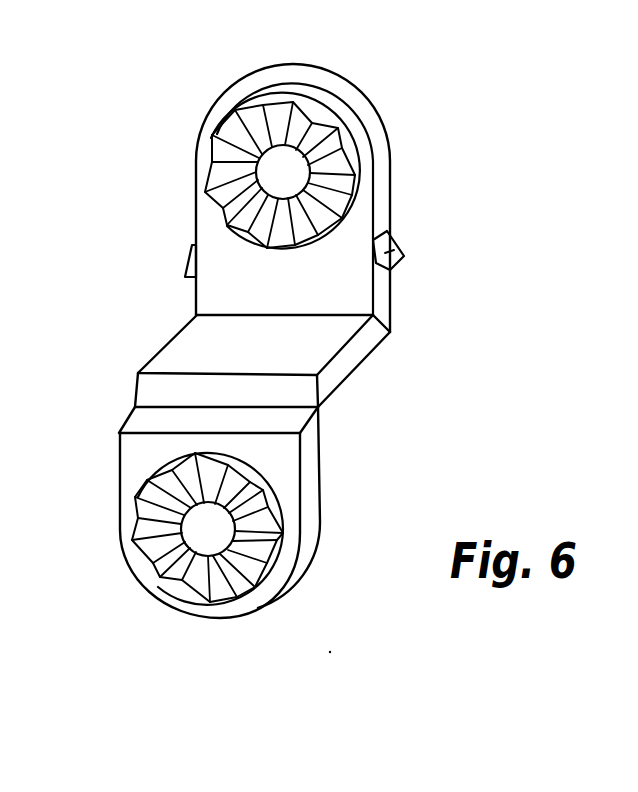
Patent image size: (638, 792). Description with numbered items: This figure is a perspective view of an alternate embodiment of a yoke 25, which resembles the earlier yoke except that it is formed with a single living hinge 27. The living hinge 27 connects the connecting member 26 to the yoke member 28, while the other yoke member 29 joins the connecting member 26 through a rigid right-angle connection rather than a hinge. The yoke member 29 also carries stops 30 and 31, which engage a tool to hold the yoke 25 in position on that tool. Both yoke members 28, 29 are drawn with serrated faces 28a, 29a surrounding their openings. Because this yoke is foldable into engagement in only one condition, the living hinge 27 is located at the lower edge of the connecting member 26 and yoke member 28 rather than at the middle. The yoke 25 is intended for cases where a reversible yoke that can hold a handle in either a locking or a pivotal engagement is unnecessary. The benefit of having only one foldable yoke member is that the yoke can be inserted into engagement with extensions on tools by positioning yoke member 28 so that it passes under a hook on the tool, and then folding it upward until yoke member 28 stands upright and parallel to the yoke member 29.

The yoke 25 is at (440, 84).
The connecting member 26 is at (360, 362).
The living hinge 27 is at (318, 407).
The yoke member 28 is at (308, 506).
The serrated lock washer face of lower plate 28a is at (168, 578).
The yoke member 29 is at (343, 97).
The serrated lock washer face of upper plate 29a is at (278, 110).
The stop 30 is at (396, 246).
The stop 31 is at (188, 263).